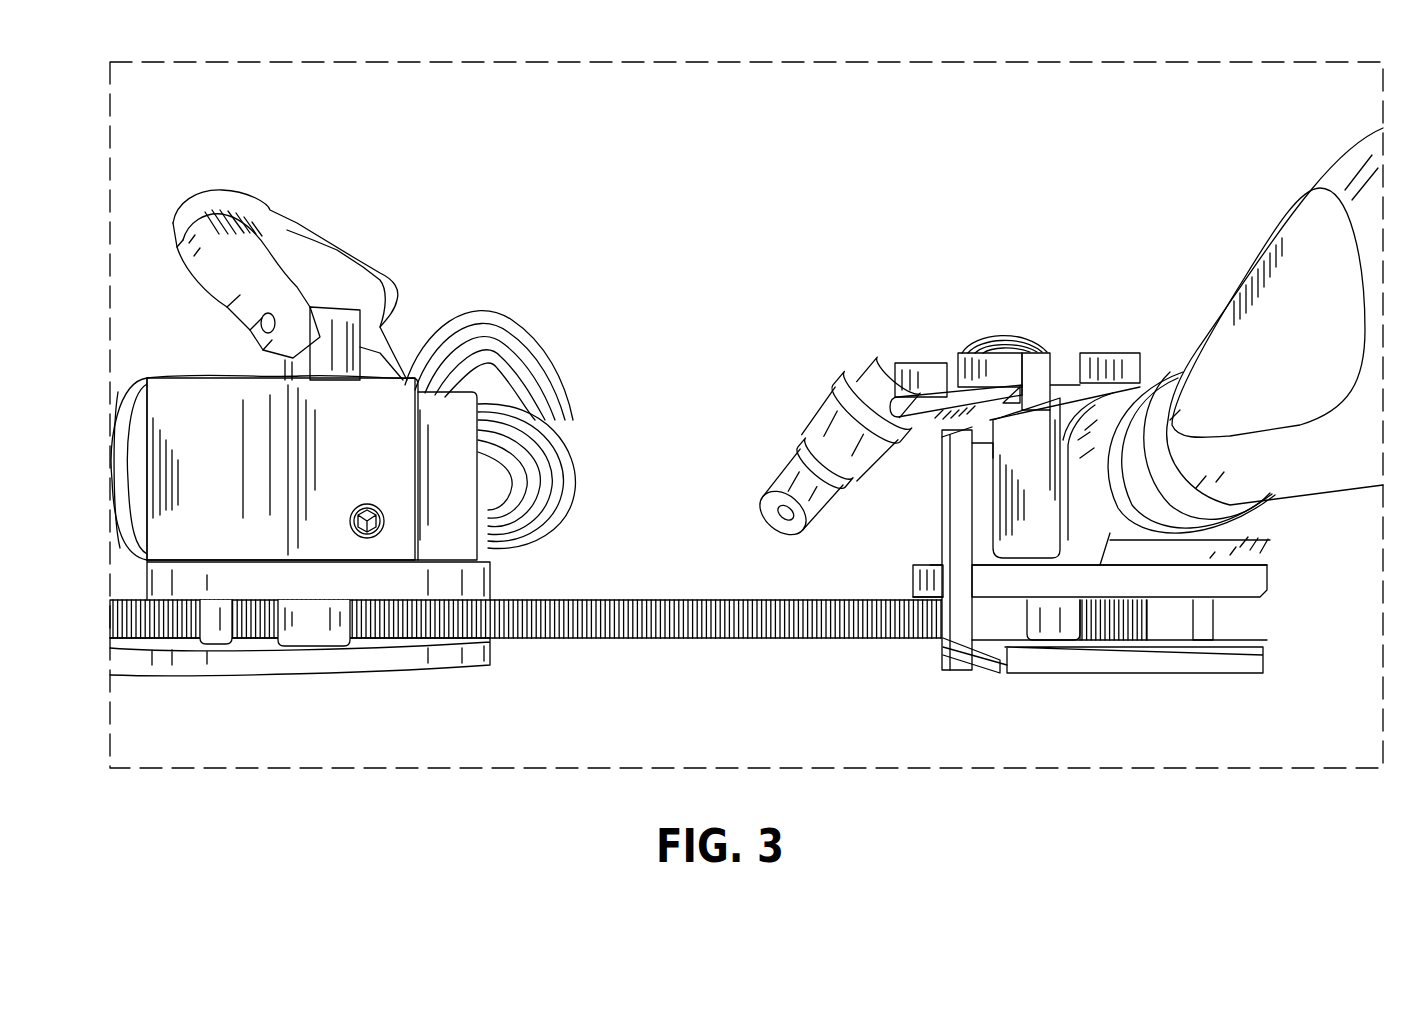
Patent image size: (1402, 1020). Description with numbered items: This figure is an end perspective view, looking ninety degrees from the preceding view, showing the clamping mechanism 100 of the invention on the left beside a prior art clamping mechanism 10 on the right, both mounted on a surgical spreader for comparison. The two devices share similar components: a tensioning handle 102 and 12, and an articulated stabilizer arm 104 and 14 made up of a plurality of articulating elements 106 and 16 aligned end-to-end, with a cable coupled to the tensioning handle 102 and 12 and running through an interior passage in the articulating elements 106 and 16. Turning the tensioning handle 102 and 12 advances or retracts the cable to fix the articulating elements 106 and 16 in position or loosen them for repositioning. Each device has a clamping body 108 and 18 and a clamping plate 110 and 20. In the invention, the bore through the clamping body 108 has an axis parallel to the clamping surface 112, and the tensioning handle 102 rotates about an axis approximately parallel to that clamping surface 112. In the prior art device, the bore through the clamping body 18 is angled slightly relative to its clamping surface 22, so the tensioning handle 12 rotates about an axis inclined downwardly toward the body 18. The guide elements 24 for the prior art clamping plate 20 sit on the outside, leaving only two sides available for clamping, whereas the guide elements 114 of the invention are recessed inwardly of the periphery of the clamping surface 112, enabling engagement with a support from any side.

The prior art clamping mechanism 10 is at (1222, 106).
The tensioning handle 12 is at (1308, 456).
The articulated stabilizer arm 14 is at (882, 300).
The articulating elements 16 is at (843, 417).
The clamping body 18 is at (1048, 418).
The clamping plate 20 is at (1065, 657).
The clamping surface 22 is at (1010, 603).
The guide elements 24 is at (958, 618).
The clamping mechanism 100 is at (224, 106).
The tensioning handle 102 is at (116, 414).
The articulated stabilizer arm 104 is at (552, 280).
The articulating elements 106 is at (520, 390).
The clamping body 108 is at (387, 413).
The clamping plate 110 is at (237, 660).
The clamping surface 112 is at (265, 633).
The guide elements 114 is at (210, 620).